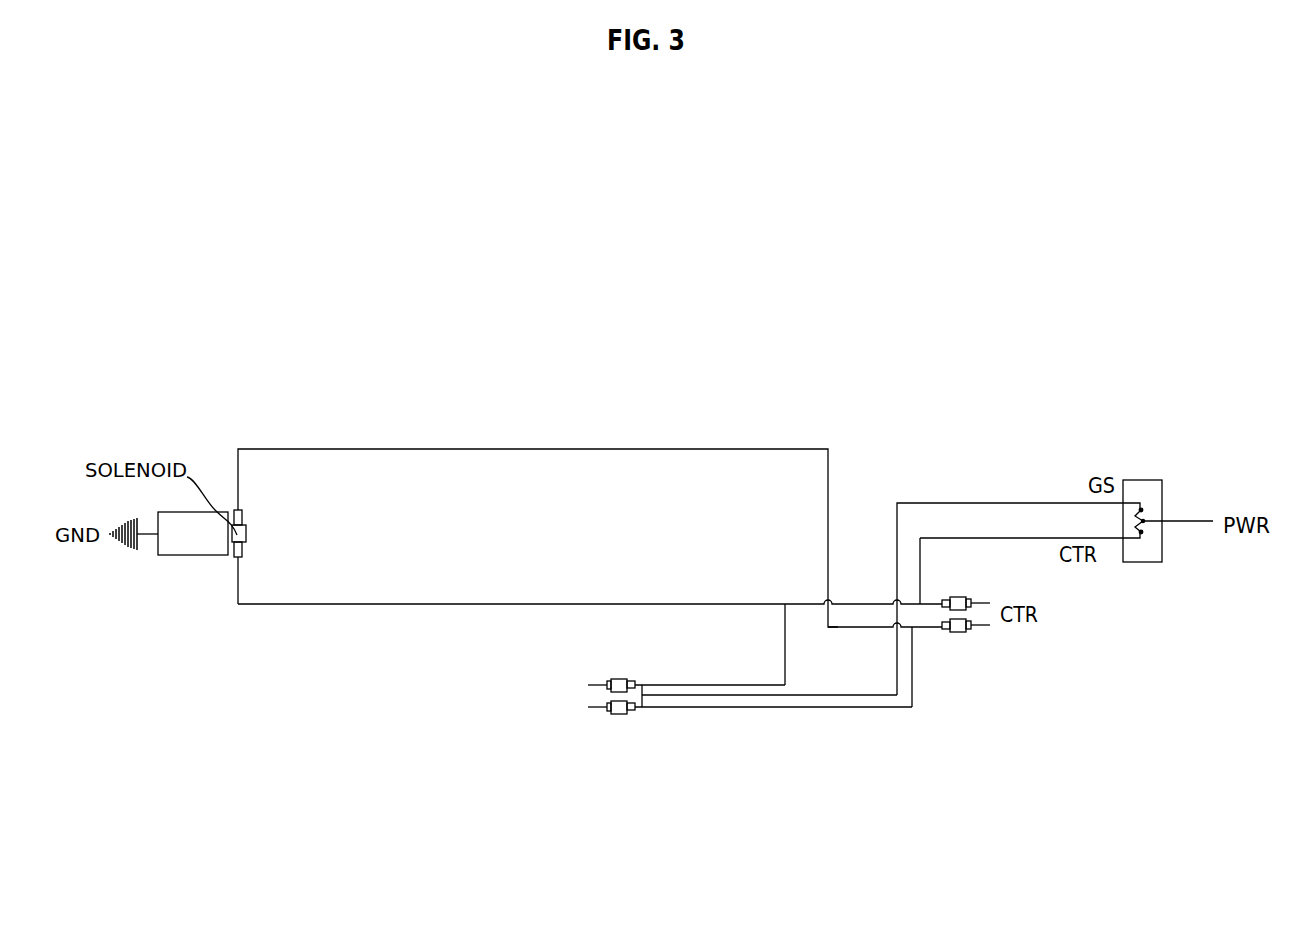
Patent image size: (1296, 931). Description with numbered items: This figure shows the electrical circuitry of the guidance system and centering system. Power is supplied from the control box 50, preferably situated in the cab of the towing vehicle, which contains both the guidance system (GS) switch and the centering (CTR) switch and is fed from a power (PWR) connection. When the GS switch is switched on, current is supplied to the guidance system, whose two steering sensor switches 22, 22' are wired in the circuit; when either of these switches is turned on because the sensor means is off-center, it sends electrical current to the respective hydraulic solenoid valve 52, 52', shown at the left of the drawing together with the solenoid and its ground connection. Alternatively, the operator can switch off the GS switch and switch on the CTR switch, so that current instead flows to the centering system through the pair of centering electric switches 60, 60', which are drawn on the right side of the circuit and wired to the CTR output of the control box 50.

The hydraulic solenoid valve 52' is at (291, 518).
The hydraulic solenoid valve 52 is at (288, 544).
The steering sensor switch 22 is at (647, 655).
The steering sensor switch 22' is at (643, 742).
The centering electric switch 60 is at (984, 577).
The centering electric switch 60' is at (990, 661).
The control box 50 is at (1155, 555).